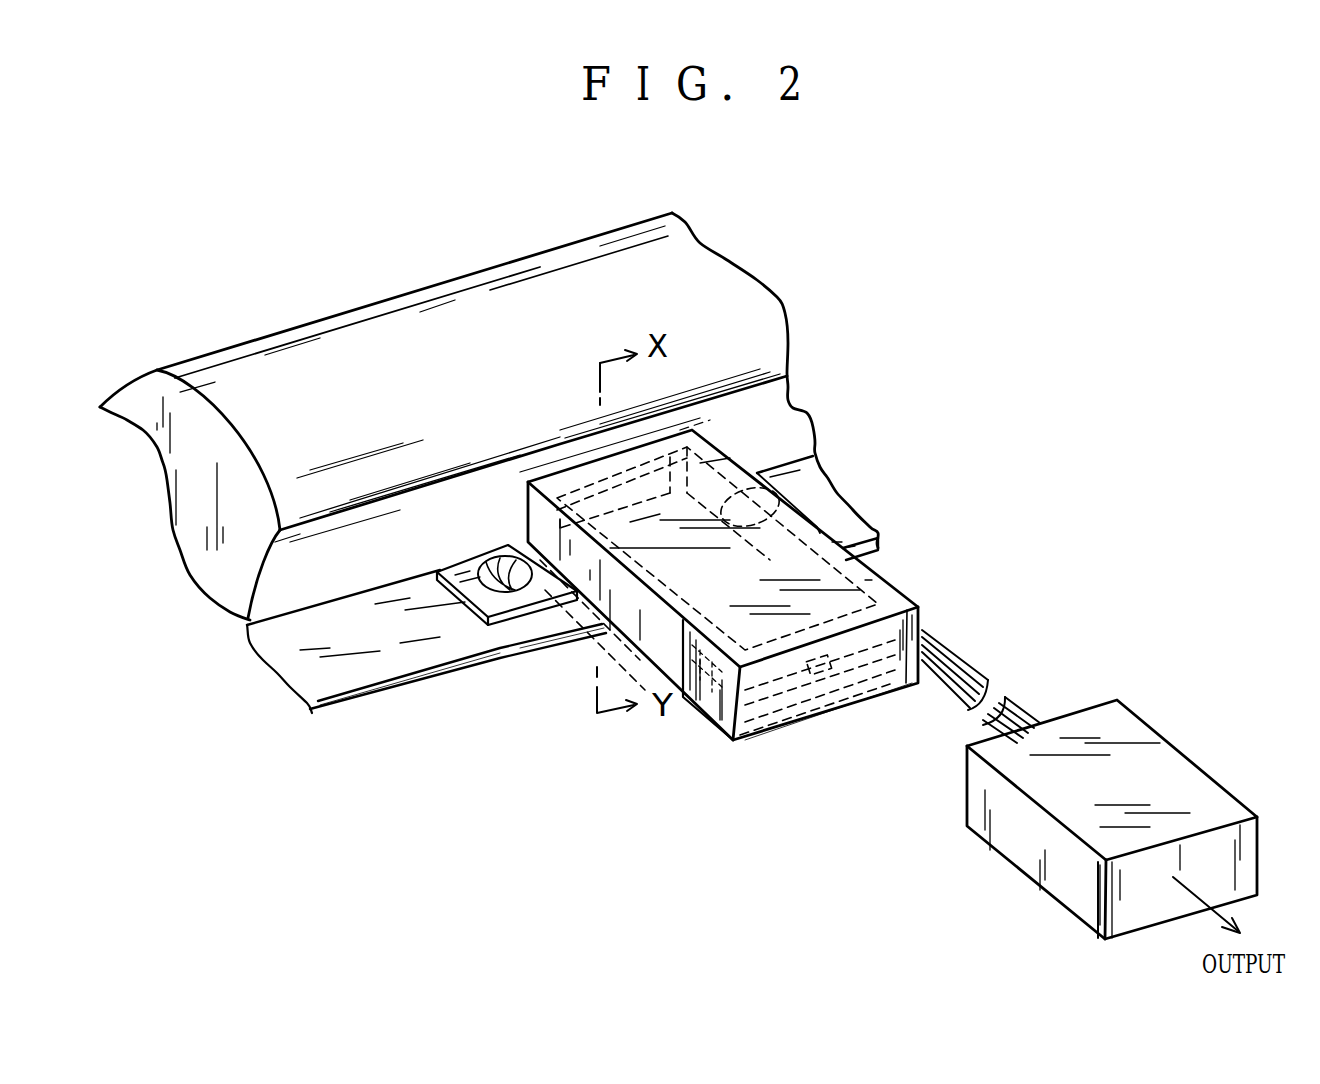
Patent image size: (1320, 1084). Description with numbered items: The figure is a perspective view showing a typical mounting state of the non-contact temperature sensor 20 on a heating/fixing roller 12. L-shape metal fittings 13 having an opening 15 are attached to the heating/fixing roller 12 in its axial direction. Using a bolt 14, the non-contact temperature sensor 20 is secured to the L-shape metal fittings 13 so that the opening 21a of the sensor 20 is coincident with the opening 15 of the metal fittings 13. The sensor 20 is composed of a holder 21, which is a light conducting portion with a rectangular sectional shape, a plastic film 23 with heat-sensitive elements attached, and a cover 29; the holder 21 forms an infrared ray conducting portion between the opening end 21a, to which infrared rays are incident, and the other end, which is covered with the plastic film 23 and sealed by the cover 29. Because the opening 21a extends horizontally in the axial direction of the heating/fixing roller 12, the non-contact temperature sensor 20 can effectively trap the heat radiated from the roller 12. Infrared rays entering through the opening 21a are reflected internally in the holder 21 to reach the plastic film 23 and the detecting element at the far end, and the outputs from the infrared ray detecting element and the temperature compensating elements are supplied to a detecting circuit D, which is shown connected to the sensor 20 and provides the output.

The heating/fixing roller 12 is at (243, 363).
The L-shape metal fittings 13 is at (345, 675).
The bolt 14 is at (499, 584).
The opening 15 is at (705, 485).
The non-contact temperature sensor 20 is at (833, 533).
The holder 21 is at (815, 540).
The opening 21a is at (667, 442).
The plastic film 23 is at (754, 712).
The cover 29 is at (783, 713).
The detecting circuit D is at (1165, 739).